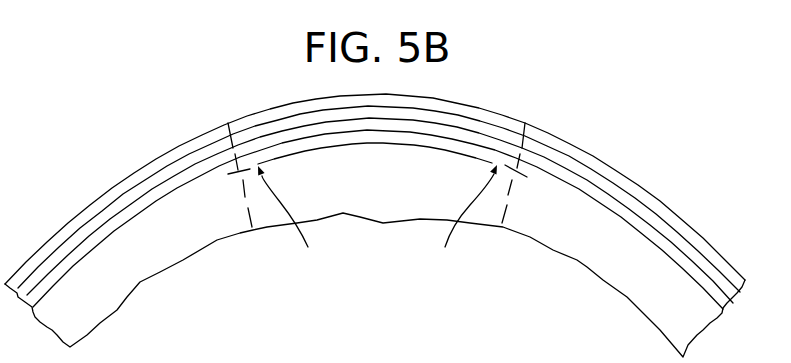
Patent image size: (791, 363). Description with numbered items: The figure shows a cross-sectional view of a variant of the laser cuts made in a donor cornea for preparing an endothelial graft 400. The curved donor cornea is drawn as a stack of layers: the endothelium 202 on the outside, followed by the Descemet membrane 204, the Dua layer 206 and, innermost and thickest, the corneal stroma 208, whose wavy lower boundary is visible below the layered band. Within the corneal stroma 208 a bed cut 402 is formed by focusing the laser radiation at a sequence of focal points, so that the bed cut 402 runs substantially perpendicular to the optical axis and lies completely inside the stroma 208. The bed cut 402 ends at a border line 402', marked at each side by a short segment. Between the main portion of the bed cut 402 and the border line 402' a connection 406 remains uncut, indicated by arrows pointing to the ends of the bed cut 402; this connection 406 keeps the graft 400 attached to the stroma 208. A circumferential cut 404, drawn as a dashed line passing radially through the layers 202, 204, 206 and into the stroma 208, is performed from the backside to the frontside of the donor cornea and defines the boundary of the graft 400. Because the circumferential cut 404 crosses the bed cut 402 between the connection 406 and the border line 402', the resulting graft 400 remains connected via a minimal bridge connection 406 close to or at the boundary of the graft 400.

The graft 400 is at (243, 70).
The endothelium 202 is at (568, 150).
The Descemet membrane 204 is at (607, 182).
The Dua layer 206 is at (651, 231).
The corneal stroma 208 is at (614, 285).
The bed cut 402 is at (375, 173).
The border line 402' is at (377, 206).
The circumferential cut 404 is at (250, 228).
The connection 406 is at (377, 225).